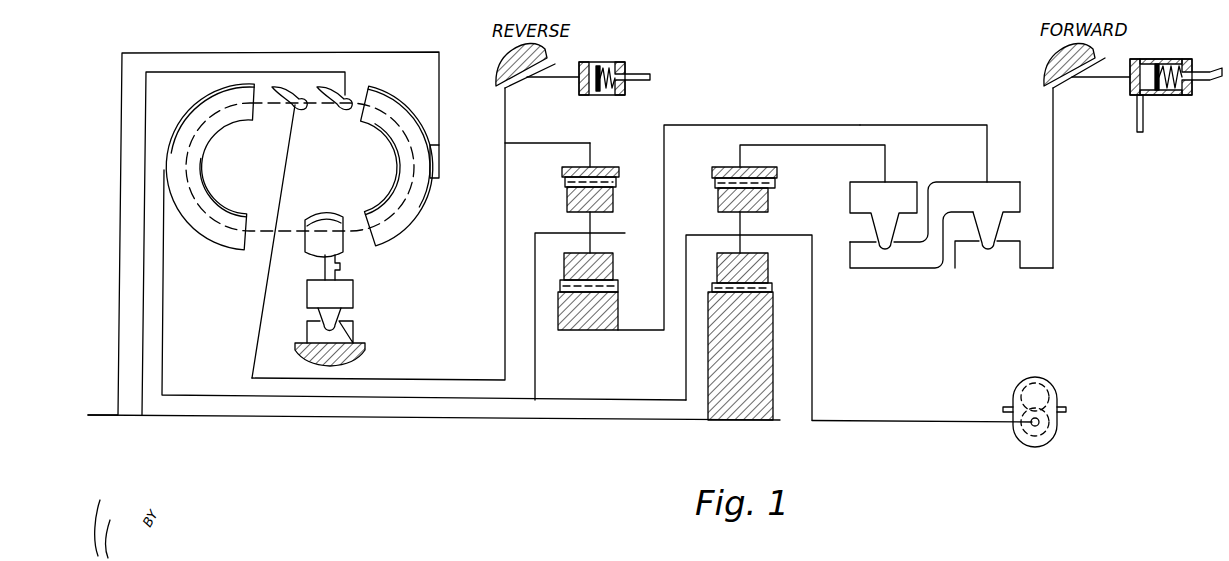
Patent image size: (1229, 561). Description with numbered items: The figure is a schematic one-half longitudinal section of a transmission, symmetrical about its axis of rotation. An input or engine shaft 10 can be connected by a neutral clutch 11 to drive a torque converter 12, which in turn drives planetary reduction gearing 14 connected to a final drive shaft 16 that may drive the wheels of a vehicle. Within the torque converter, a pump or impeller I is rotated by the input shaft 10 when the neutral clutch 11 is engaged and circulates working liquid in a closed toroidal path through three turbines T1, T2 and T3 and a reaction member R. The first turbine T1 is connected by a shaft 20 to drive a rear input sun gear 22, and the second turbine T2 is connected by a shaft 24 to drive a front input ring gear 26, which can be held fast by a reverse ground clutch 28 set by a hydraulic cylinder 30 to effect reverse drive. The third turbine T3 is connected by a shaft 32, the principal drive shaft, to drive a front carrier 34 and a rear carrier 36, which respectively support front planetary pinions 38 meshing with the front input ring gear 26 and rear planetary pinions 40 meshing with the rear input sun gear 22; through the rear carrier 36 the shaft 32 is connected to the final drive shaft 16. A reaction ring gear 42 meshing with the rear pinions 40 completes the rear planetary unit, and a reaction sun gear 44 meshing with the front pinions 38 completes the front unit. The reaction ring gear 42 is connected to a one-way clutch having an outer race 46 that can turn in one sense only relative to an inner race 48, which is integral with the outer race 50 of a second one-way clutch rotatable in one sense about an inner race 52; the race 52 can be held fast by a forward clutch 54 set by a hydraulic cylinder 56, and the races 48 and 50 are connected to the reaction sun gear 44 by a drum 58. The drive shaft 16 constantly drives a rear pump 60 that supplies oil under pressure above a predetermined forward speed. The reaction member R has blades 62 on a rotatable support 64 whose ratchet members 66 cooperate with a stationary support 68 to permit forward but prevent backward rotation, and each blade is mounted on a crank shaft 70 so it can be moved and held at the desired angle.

The input shaft 10 is at (104, 416).
The neutral clutch 11 is at (441, 162).
The torque converter 12 is at (253, 50).
The planetary reduction gearing 14 is at (718, 123).
The final drive shaft 16 is at (882, 421).
The shaft 20 is at (571, 421).
The rear input sun gear 22 is at (760, 346).
The shaft 24 is at (437, 378).
The front input ring gear 26 is at (600, 168).
The reverse ground clutch 28 is at (525, 87).
The hydraulic cylinder 30 is at (616, 62).
The shaft 32 is at (213, 395).
The front carrier 34 is at (617, 233).
The rear carrier 36 is at (790, 236).
The front planetary pinions 38 is at (568, 190).
The rear planetary pinions 40 is at (769, 200).
The reaction ring gear 42 is at (778, 172).
The reaction sun gear 44 is at (596, 331).
The outer race 46 is at (893, 188).
The inner race 48 is at (897, 262).
The outer race 50 is at (1000, 190).
The inner race 52 is at (977, 258).
The forward clutch 54 is at (1065, 85).
The hydraulic cylinder 56 is at (1163, 95).
The drum 58 is at (870, 125).
The rear pump 60 is at (1040, 386).
The blades 62 is at (319, 248).
The rotatable support 64 is at (348, 300).
The ratchet members 66 is at (333, 318).
The stationary support 68 is at (310, 337).
The crank shaft 70 is at (337, 272).
The first turbine T1 is at (345, 111).
The second turbine T2 is at (301, 111).
The third turbine T3 is at (213, 150).
The reaction member R is at (331, 211).
The pump I is at (404, 220).